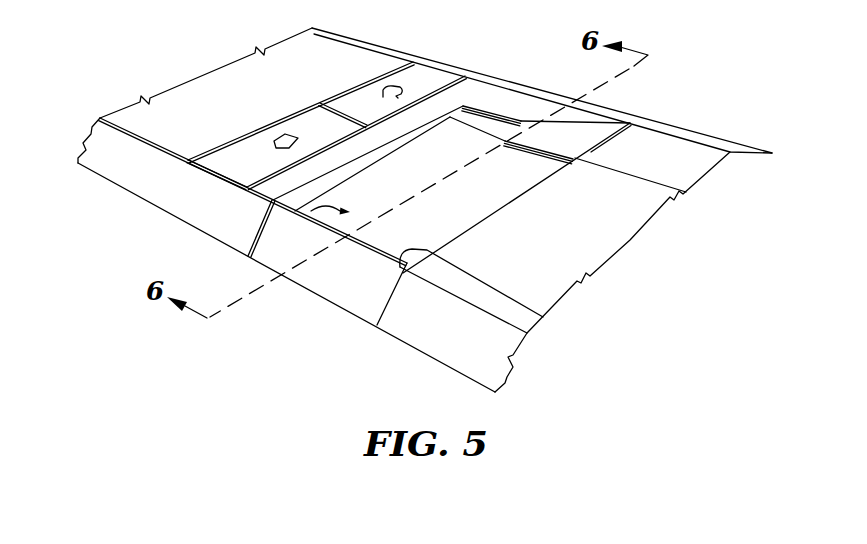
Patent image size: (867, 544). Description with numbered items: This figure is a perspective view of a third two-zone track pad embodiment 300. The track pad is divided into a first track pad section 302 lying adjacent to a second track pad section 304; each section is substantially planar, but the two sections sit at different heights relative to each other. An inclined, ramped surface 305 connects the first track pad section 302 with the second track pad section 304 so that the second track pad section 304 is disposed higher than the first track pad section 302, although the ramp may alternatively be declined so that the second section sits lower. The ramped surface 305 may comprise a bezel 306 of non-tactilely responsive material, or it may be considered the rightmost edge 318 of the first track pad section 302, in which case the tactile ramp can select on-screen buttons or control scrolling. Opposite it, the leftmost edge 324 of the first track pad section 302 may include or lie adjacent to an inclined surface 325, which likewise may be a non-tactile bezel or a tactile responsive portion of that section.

The track pad embodiment 300 is at (125, 252).
The first track pad section 302 is at (297, 217).
The second track pad section 304 is at (579, 116).
The ramped surface 305 is at (551, 145).
The bezel 306 is at (489, 113).
The rightmost edge 318 is at (531, 119).
The leftmost edge 324 is at (543, 317).
The inclined surface 325 is at (347, 238).